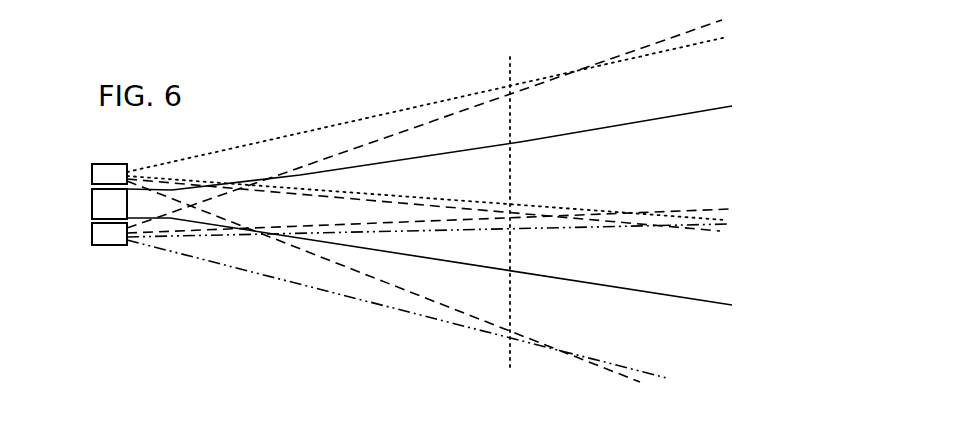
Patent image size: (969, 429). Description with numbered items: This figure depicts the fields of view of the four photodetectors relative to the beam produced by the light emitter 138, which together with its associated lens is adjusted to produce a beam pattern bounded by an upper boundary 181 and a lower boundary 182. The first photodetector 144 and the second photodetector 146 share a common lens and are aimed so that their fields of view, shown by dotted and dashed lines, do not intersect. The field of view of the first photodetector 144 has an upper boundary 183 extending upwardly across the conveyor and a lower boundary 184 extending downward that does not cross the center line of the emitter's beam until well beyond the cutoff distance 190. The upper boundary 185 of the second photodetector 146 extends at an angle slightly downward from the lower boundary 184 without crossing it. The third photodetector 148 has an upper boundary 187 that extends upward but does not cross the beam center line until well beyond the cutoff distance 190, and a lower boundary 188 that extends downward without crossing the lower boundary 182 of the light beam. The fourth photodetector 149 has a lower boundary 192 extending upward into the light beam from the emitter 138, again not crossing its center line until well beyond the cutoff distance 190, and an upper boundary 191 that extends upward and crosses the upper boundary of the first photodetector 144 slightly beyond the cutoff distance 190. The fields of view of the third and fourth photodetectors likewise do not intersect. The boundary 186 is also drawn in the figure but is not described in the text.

The light emitter 138 is at (92, 205).
The first photodetector 144 is at (97, 165).
The second photodetector 146 is at (122, 165).
The third photodetector 148 is at (98, 248).
The fourth photodetector 149 is at (115, 248).
The upper boundary of light beam 181 is at (668, 118).
The lower boundary of light beam 182 is at (672, 290).
The upper boundary of first photodetector field of view 183 is at (685, 48).
The lower boundary of first photodetector field of view 184 is at (533, 208).
The upper boundary of second photodetector field of view 185 is at (397, 198).
The downward ray from first source 186 is at (536, 340).
The upper boundary of third photodetector field of view 187 is at (540, 228).
The lower boundary of third photodetector field of view 188 is at (338, 300).
The cutoff distance 190 is at (508, 349).
The upper boundary of fourth photodetector field of view 191 is at (634, 54).
The lower boundary of fourth photodetector field of view 192 is at (660, 213).